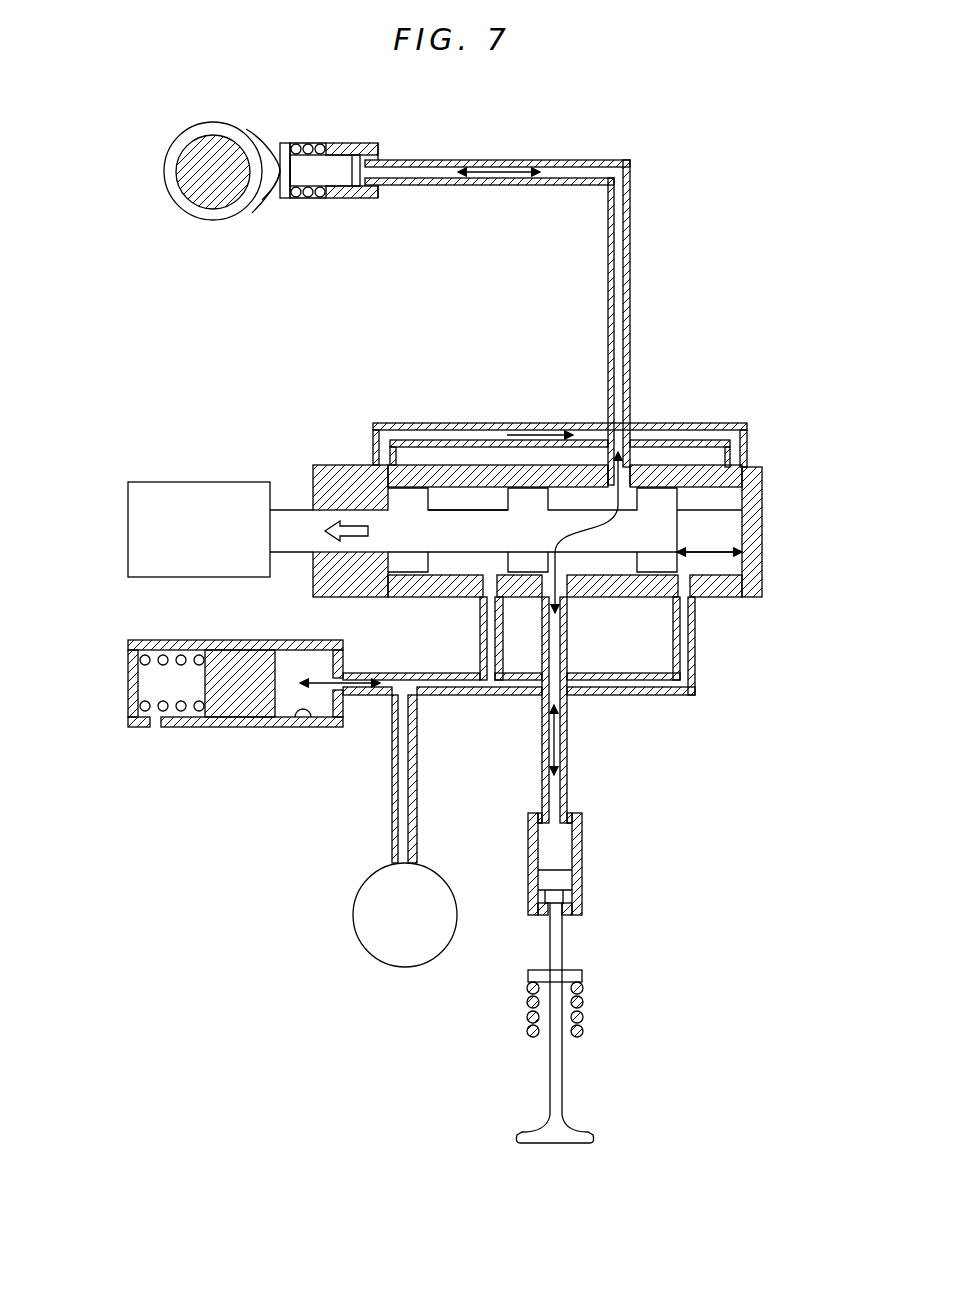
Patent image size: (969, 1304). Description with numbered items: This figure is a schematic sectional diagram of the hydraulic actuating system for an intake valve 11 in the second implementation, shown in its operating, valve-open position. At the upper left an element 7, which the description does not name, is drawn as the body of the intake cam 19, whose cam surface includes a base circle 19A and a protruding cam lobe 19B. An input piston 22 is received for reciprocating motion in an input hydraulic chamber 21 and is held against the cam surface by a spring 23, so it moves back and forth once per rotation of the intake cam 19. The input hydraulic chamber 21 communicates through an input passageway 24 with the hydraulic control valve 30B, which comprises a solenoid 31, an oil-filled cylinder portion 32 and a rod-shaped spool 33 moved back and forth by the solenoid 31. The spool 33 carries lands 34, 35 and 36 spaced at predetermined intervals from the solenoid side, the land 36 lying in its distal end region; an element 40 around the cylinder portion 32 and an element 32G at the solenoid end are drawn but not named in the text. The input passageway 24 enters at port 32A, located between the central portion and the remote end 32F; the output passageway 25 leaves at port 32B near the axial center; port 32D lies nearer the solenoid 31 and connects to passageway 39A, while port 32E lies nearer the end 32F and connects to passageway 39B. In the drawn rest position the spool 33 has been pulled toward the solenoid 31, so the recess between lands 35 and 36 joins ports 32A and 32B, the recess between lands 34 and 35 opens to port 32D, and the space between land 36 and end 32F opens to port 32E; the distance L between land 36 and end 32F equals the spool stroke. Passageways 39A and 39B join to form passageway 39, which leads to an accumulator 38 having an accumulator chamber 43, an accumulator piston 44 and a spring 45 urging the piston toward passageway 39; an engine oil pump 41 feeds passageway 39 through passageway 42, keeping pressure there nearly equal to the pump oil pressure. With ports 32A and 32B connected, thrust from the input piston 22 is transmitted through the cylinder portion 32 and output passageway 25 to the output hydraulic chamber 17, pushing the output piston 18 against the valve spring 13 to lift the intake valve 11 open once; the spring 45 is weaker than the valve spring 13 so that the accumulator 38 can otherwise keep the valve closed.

The cam 7 is at (192, 127).
The intake cam 19 is at (262, 138).
The base circle 19A is at (185, 216).
The cam lobe 19B is at (273, 190).
The input hydraulic chamber 21 is at (357, 150).
The input piston 22 is at (333, 182).
The spring 23 is at (306, 143).
The input passageway 24 is at (632, 251).
The hydraulic control valve 30B is at (568, 504).
The chamber 40 is at (698, 422).
The cylinder portion 32 is at (572, 492).
The port 32A is at (598, 466).
The port 32B is at (578, 577).
The port 32D is at (472, 598).
The port 32E is at (705, 592).
The end of the cylinder portion 32F is at (736, 526).
The end wall 32G is at (383, 498).
The spool 33 is at (475, 506).
The land 34 is at (404, 566).
The land 35 is at (525, 566).
The land 36 is at (652, 566).
The distance L is at (709, 539).
The solenoid 31 is at (205, 482).
The accumulator 38 is at (238, 731).
The accumulator chamber 43 is at (316, 722).
The accumulator piston 44 is at (247, 672).
The spring 45 is at (181, 656).
The passageway 39 is at (466, 698).
The passageway 39A is at (478, 634).
The passageway 39B is at (701, 670).
The passageway 42 is at (392, 789).
The engine oil pump 41 is at (353, 917).
The output passageway 25 is at (568, 762).
The output hydraulic chamber 17 is at (560, 843).
The output piston 18 is at (562, 884).
The valve spring 13 is at (584, 1000).
The intake valve 11 is at (563, 1060).